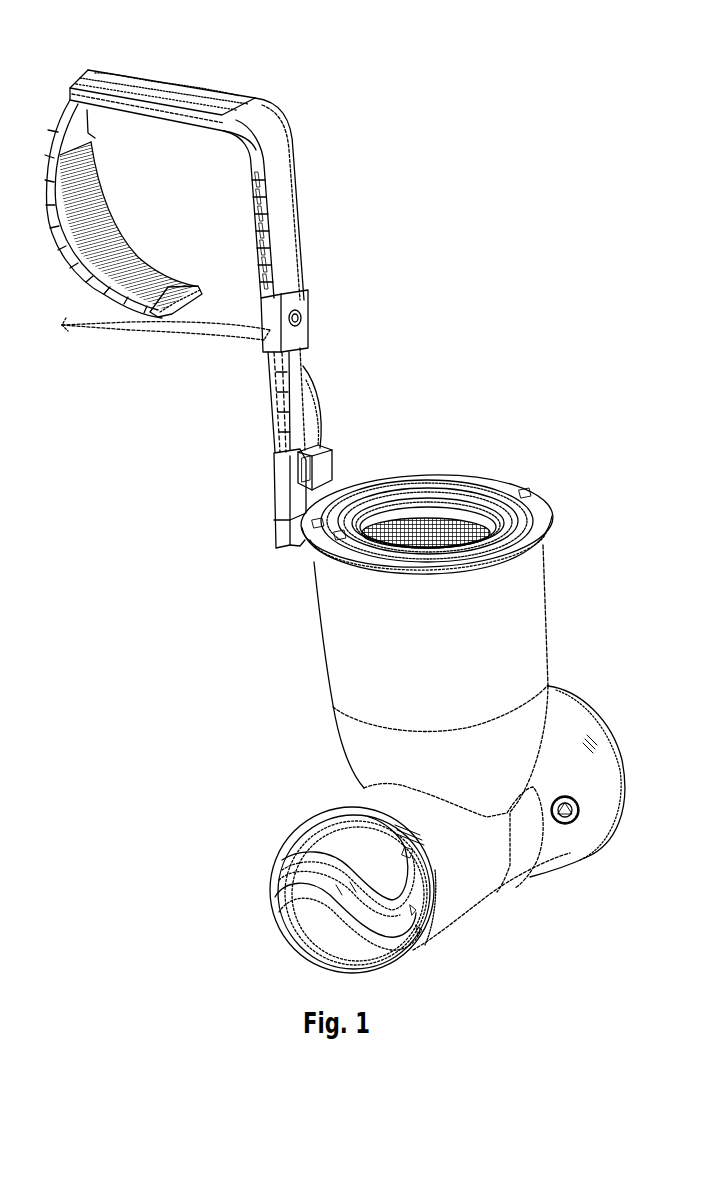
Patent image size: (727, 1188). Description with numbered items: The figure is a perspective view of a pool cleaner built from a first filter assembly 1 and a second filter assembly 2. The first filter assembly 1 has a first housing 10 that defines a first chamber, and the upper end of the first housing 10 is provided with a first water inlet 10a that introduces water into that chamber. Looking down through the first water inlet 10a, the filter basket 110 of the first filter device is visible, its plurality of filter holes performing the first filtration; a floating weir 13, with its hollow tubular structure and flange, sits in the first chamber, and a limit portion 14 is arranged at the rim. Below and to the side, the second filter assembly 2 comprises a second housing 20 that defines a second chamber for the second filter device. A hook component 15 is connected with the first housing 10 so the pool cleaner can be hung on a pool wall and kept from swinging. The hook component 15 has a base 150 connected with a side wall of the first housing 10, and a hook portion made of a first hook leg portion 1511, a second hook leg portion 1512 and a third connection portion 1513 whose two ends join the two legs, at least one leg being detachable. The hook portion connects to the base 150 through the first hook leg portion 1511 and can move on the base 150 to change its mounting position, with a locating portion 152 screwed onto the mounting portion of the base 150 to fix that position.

The first filter assembly 1 is at (323, 633).
The second filter assembly 2 is at (272, 842).
The first housing 10 is at (535, 613).
The first water inlet 10a is at (527, 508).
The floating weir 13 is at (503, 503).
The limit portion 14 is at (395, 481).
The hook component 15 is at (299, 199).
The second housing 20 is at (448, 893).
The filter basket 110 is at (418, 527).
The base 150 is at (273, 483).
The locating portion 152 is at (310, 462).
The first hook leg portion 1511 is at (288, 247).
The second hook leg portion 1512 is at (117, 263).
The third connection portion 1513 is at (187, 118).